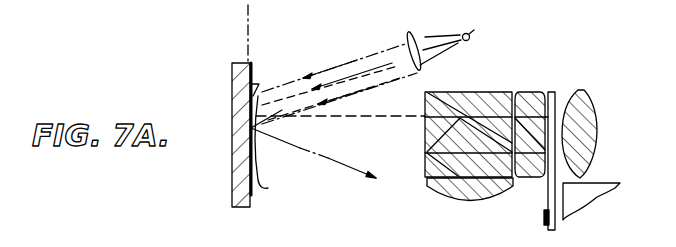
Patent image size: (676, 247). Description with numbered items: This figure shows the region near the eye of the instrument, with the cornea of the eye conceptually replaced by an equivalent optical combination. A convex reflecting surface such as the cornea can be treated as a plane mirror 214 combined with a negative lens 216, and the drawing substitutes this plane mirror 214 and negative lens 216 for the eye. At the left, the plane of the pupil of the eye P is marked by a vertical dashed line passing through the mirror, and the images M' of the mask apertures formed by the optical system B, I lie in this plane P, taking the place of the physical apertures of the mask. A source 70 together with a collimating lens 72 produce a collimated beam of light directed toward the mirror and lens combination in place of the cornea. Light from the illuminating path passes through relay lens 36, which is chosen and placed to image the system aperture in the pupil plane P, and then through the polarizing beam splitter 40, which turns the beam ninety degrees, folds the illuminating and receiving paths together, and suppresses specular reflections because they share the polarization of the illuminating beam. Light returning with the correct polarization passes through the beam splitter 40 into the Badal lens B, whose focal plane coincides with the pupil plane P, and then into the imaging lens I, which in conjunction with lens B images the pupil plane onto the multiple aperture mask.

The pupil plane of the eye P is at (248, 20).
The plane mirror 214 is at (233, 190).
The images of the apertures of mask M M' is at (274, 129).
The negative lens 216 is at (268, 188).
The collimating lens 72 is at (409, 31).
The source 70 is at (474, 30).
The polarizing beam splitter 40 is at (468, 92).
The relay lens 36 is at (427, 192).
The Badal lens B is at (522, 92).
The imaging lens I is at (583, 90).